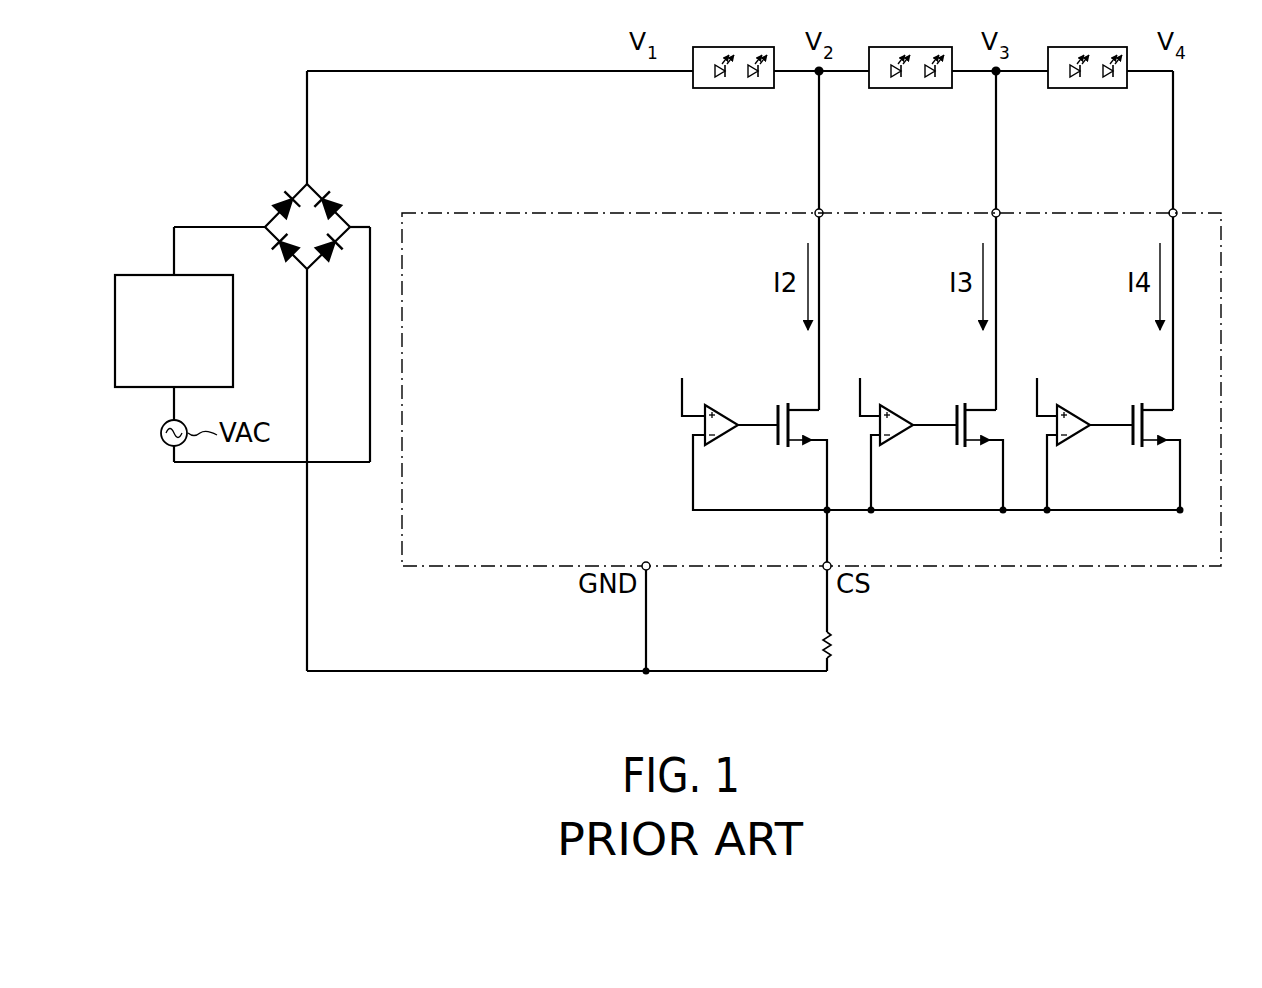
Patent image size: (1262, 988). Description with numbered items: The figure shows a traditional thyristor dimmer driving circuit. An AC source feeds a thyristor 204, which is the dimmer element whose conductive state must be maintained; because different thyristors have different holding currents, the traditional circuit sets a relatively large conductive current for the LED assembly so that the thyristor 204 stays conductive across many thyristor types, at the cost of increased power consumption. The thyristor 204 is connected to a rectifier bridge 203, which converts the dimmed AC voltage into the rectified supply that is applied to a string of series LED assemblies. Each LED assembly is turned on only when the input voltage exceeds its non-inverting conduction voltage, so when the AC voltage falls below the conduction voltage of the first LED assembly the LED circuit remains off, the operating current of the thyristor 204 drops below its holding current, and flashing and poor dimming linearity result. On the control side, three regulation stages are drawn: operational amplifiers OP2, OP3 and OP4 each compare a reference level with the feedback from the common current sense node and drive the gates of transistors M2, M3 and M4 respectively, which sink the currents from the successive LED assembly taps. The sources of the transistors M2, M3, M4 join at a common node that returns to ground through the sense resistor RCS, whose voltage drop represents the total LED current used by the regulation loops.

The bridge rectifier 203 is at (345, 190).
The thyristor 204 is at (174, 331).
The operational amplifier OP2 is at (742, 427).
The operational amplifier OP3 is at (919, 427).
The operational amplifier OP4 is at (1095, 427).
The transistor M2 is at (800, 456).
The transistor M3 is at (975, 456).
The transistor M4 is at (1152, 456).
The current sense resistor RCS is at (852, 653).